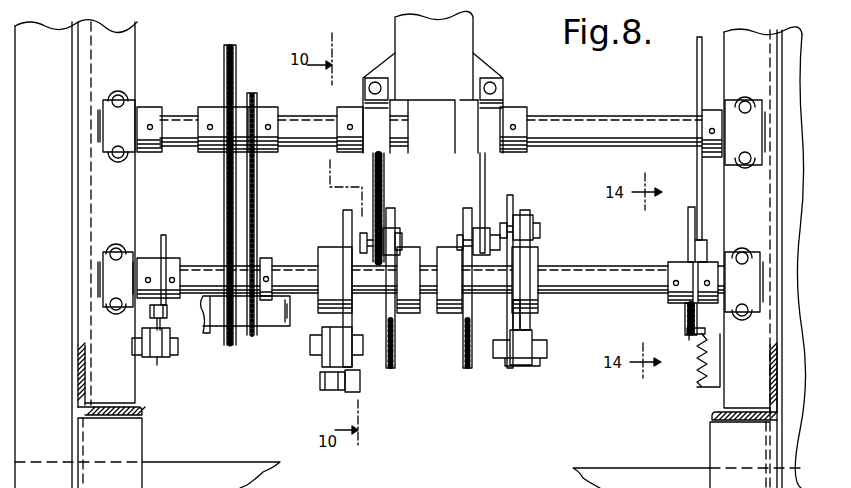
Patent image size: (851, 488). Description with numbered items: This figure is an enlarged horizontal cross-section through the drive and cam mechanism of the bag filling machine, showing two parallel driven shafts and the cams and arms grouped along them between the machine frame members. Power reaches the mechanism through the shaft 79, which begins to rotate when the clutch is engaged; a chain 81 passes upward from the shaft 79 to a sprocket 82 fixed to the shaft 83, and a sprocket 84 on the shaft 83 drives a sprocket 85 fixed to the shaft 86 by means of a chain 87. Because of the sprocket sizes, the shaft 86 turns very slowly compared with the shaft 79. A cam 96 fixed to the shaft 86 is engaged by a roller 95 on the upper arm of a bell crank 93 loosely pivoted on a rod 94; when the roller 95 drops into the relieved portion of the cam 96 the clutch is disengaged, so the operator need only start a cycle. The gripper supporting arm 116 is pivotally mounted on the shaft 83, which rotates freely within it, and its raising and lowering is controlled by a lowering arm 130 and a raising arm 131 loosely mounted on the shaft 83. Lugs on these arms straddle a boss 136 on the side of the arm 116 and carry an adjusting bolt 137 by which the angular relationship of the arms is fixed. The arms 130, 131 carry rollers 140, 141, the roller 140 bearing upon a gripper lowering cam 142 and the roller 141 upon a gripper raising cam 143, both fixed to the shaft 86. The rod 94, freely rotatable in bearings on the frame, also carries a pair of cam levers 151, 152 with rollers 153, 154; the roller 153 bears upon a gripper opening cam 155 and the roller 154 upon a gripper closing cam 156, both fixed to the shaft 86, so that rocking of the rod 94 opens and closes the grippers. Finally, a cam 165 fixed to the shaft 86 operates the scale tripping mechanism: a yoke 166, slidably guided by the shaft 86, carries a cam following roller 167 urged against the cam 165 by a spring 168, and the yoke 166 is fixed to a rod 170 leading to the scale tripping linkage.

The shaft 79 is at (273, 327).
The chain 81 is at (224, 208).
The sprocket 82 is at (212, 140).
The shaft 83 is at (578, 118).
The sprocket 84 is at (270, 150).
The sprocket 85 is at (268, 262).
The shaft 86 is at (564, 266).
The chain 87 is at (258, 208).
The bell crank 93 is at (158, 362).
The rod 94 is at (165, 348).
The roller 95 is at (164, 316).
The cam 96 is at (167, 242).
The gripper supporting arm 116 is at (462, 46).
The lowering arm 130 is at (486, 180).
The raising arm 131 is at (384, 177).
The boss 136 is at (378, 70).
The adjusting bolt 137 is at (485, 86).
The roller 140 is at (462, 238).
The roller 141 is at (398, 236).
The gripper lowering cam 142 is at (466, 369).
The gripper raising cam 143 is at (388, 369).
The cam lever 151 is at (334, 388).
The cam lever 152 is at (531, 322).
The roller 153 is at (352, 389).
The roller 154 is at (525, 220).
The gripper opening cam 155 is at (349, 316).
The gripper closing cam 156 is at (507, 310).
The cam 165 is at (684, 308).
The yoke 166 is at (690, 338).
The cam following roller 167 is at (688, 238).
The spring 168 is at (708, 370).
The rod 170 is at (700, 88).